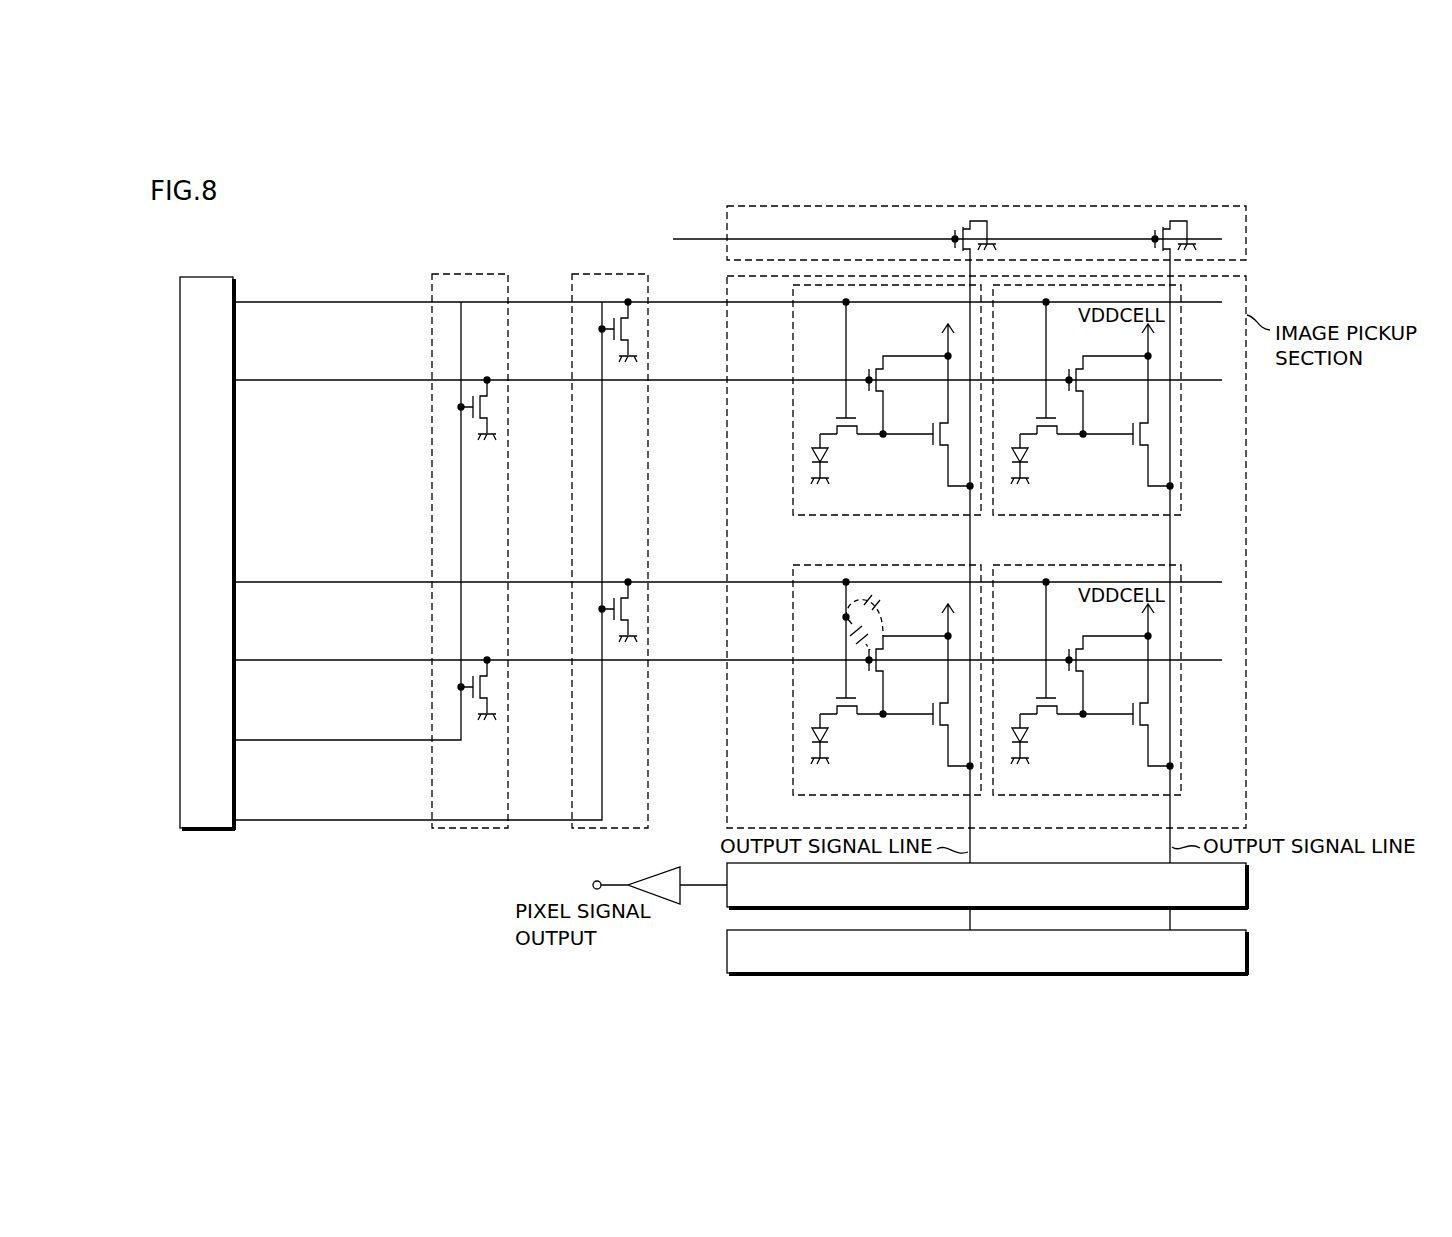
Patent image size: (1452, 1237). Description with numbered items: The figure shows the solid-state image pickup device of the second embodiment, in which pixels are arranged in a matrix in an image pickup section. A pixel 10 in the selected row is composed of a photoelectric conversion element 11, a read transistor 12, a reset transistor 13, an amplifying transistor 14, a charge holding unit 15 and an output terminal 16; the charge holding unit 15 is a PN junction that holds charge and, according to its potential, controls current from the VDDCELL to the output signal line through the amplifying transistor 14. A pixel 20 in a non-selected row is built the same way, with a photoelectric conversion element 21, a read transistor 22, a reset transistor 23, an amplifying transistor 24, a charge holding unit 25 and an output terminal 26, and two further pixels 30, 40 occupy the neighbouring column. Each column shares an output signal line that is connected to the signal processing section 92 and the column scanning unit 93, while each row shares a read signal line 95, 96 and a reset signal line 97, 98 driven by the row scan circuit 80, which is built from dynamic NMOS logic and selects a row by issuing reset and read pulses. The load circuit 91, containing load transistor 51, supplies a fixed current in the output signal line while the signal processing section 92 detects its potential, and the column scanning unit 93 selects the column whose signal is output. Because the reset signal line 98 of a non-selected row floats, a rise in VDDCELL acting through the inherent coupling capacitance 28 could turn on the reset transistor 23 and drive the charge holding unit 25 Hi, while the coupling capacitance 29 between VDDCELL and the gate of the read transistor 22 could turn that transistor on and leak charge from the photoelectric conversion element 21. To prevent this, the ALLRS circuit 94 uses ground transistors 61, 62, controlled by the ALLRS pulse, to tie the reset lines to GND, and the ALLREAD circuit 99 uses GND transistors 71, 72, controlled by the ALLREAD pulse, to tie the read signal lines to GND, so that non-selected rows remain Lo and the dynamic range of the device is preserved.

The row scan circuit 80 is at (198, 276).
The read signal line 95 is at (240, 302).
The reset signal line 97 is at (240, 380).
The read signal line 96 is at (240, 582).
The reset signal line 98 is at (240, 660).
The ALLRS circuit 94 is at (474, 273).
The ALLREAD circuit 99 is at (611, 273).
The ground transistor 61 is at (490, 408).
The ground transistor 62 is at (490, 688).
The GND transistor 71 is at (631, 330).
The GND transistor 72 is at (631, 610).
The load circuit 91 is at (1033, 241).
The load transistor 51 is at (958, 228).
The pixel 10 is at (812, 518).
The photoelectric conversion element 11 is at (808, 455).
The read transistor 12 is at (849, 438).
The reset transistor 13 is at (868, 368).
The amplifying transistor 14 is at (931, 442).
The charge holding unit 15 is at (884, 430).
The output terminal 16 is at (964, 488).
The pixel 20 is at (812, 798).
The photoelectric conversion element 21 is at (808, 735).
The read transistor 22 is at (849, 718).
The reset transistor 23 is at (890, 651).
The amplifying transistor 24 is at (931, 722).
The charge holding unit 25 is at (884, 710).
The output terminal 26 is at (964, 768).
The coupling capacitance 28 is at (846, 632).
The coupling capacitance 29 is at (856, 602).
The pixel 30 is at (1012, 518).
The pixel 40 is at (1012, 798).
The signal processing section 92 is at (1250, 870).
The column scanning unit 93 is at (1250, 940).